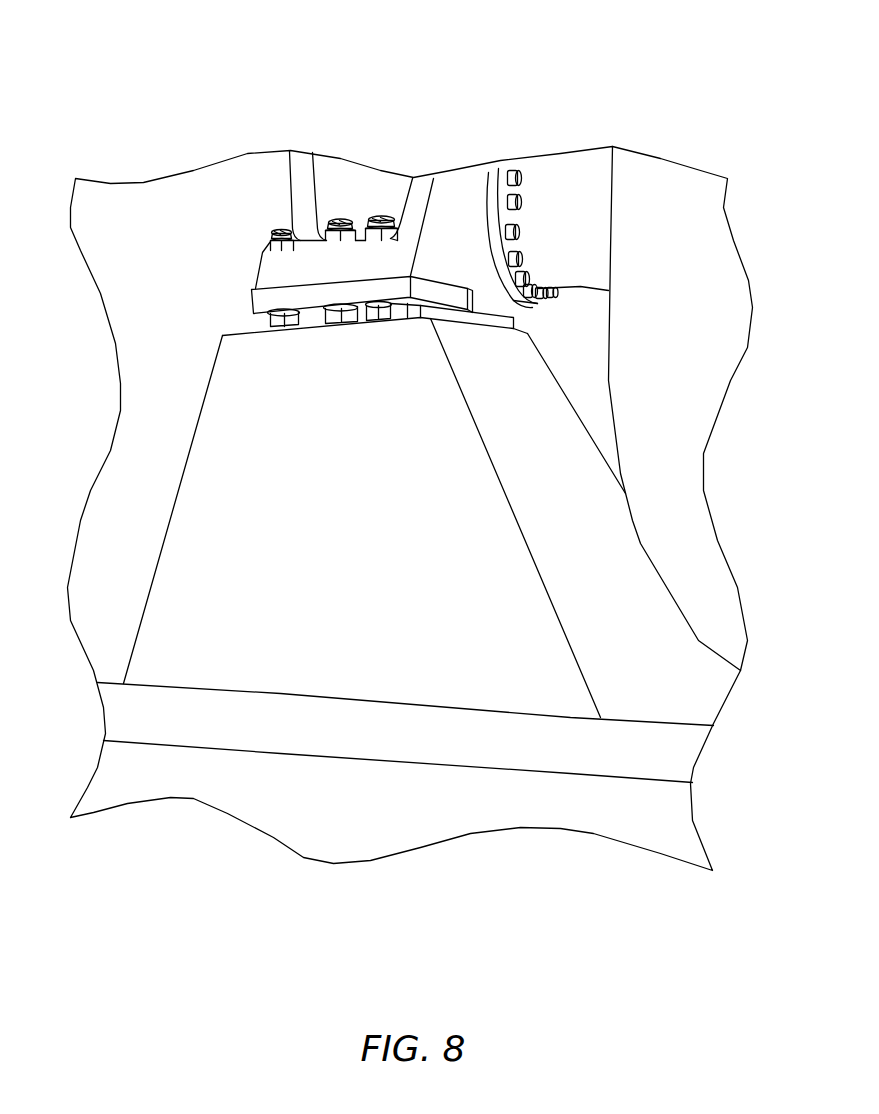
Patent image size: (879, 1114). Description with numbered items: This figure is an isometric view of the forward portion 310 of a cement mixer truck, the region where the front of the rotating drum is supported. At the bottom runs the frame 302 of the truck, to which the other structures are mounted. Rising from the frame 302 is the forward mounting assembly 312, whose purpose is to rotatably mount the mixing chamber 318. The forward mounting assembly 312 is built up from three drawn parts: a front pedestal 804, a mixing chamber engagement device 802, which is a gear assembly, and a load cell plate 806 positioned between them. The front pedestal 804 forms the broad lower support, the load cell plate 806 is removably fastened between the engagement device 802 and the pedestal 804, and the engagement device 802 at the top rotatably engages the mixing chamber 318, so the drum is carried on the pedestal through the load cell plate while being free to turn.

The forward portion 310 is at (118, 36).
The forward mounting assembly 312 is at (180, 342).
The mixing chamber 318 is at (677, 413).
The mixing chamber engagement device 802 is at (440, 255).
The front pedestal 804 is at (193, 540).
The load cell plate 806 is at (437, 293).
The frame 302 is at (348, 743).